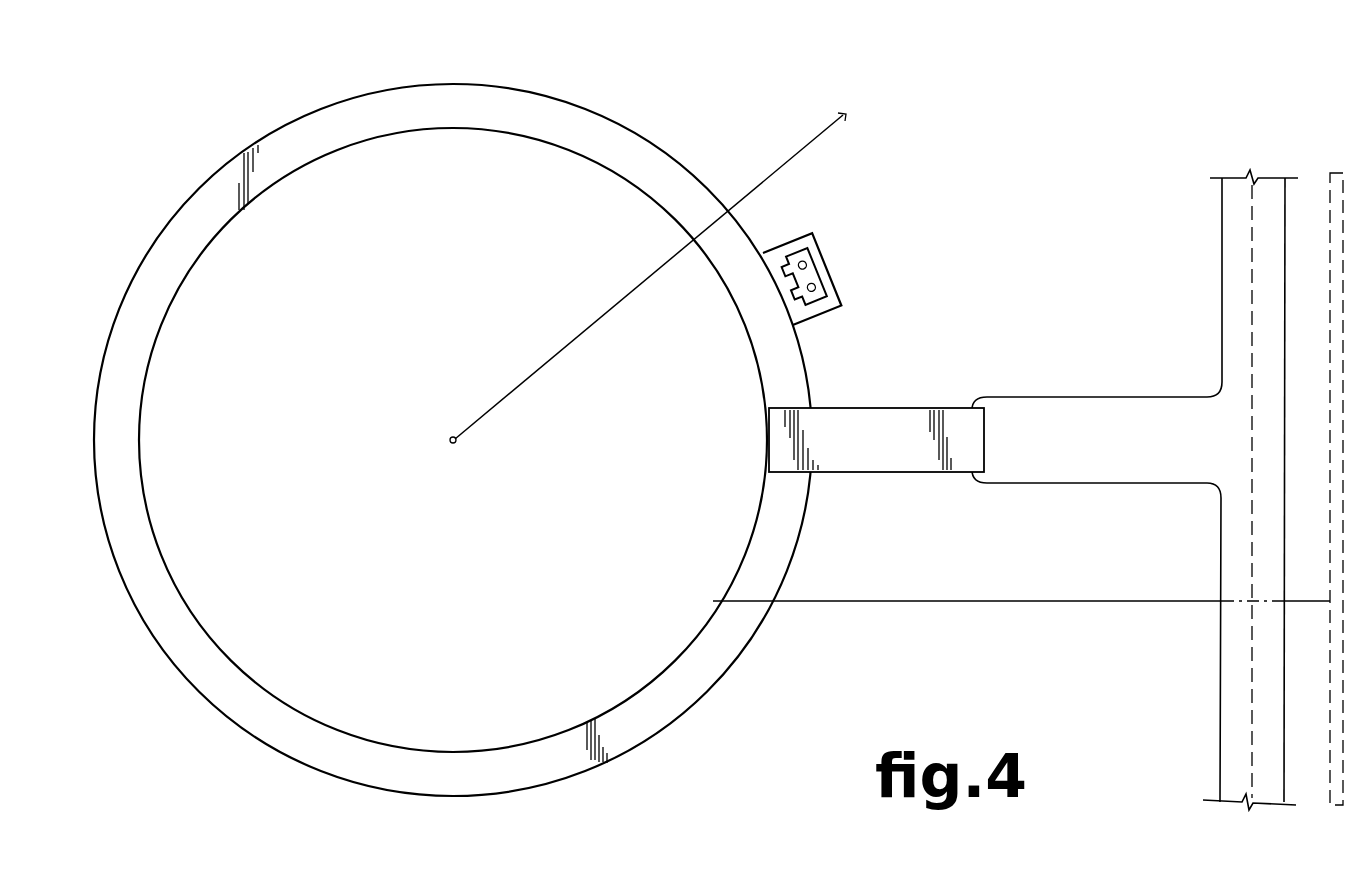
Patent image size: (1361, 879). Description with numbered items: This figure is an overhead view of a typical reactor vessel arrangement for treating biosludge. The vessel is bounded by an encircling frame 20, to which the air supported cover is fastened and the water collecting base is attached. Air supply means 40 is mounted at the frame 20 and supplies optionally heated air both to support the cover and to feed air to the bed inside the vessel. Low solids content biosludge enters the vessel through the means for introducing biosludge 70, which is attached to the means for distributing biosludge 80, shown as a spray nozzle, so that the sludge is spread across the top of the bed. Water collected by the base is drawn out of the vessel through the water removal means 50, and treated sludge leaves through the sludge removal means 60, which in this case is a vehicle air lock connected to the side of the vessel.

The encircling frame 20 is at (340, 102).
The air supply means 40 is at (828, 258).
The water removal means 50 is at (935, 601).
The sludge removal means 60 is at (897, 408).
The means for introducing low solids content biosludge 70 is at (786, 162).
The means for distributing biosludge 80 is at (450, 438).